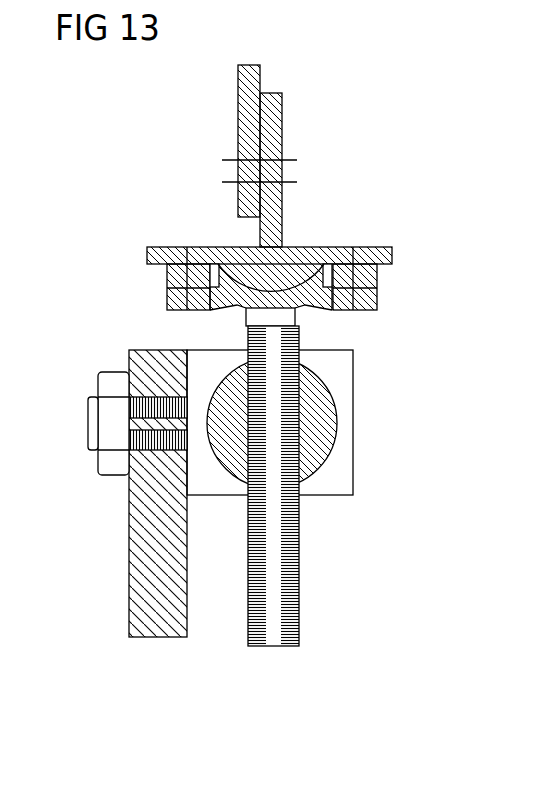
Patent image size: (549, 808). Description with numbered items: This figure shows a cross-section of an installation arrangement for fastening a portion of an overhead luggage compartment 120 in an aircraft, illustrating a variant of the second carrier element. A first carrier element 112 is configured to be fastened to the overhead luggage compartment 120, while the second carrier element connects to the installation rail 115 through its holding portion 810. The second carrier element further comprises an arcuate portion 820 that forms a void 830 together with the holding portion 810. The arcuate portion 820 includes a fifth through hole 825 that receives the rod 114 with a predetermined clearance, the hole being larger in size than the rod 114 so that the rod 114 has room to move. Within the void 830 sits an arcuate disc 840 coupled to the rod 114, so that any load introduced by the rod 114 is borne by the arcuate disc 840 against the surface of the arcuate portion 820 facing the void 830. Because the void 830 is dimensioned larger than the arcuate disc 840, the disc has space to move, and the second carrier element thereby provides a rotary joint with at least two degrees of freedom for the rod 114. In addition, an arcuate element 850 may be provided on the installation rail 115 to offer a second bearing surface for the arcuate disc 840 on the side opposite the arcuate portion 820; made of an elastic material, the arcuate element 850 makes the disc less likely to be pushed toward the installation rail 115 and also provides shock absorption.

The installation rail 115 is at (322, 247).
The void 830 is at (212, 247).
The arcuate element 850 is at (167, 293).
The holding portion 810 is at (378, 278).
The arcuate disc 840 is at (222, 306).
The arcuate portion 820 is at (313, 322).
The fifth through hole 825 is at (315, 328).
The first carrier element 112 is at (372, 459).
The rod 114 is at (277, 662).
The overhead luggage compartment 120 is at (130, 538).